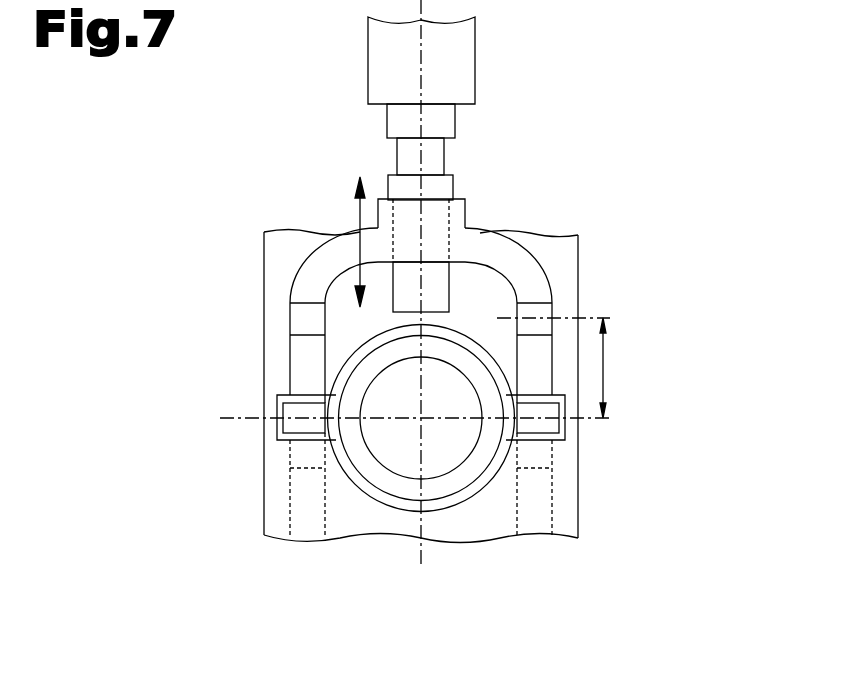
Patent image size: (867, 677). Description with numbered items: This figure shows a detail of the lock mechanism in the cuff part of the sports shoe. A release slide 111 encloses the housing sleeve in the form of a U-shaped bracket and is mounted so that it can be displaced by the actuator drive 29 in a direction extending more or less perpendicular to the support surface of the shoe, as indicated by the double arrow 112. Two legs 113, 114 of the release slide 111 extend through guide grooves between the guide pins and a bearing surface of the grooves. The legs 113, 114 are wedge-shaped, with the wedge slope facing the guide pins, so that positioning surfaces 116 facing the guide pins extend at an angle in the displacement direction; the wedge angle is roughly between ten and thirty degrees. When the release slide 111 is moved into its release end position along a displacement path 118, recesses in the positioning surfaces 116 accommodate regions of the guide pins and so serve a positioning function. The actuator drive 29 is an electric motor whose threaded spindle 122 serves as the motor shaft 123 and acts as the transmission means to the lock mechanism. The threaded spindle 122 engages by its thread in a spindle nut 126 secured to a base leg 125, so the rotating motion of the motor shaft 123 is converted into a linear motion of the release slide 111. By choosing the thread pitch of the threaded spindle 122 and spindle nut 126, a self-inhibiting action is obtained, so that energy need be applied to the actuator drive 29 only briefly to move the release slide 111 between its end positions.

The actuator drive 29 is at (522, 71).
The release slide 111 is at (510, 263).
The double arrow 112 is at (358, 255).
The leg 113 is at (303, 348).
The leg 114 is at (540, 363).
The positioning surface 116 is at (308, 362).
The displacement path 118 is at (603, 367).
The threaded spindle 122 is at (437, 288).
The motor shaft 123 is at (432, 159).
The base leg 125 is at (500, 179).
The spindle nut 126 is at (402, 185).